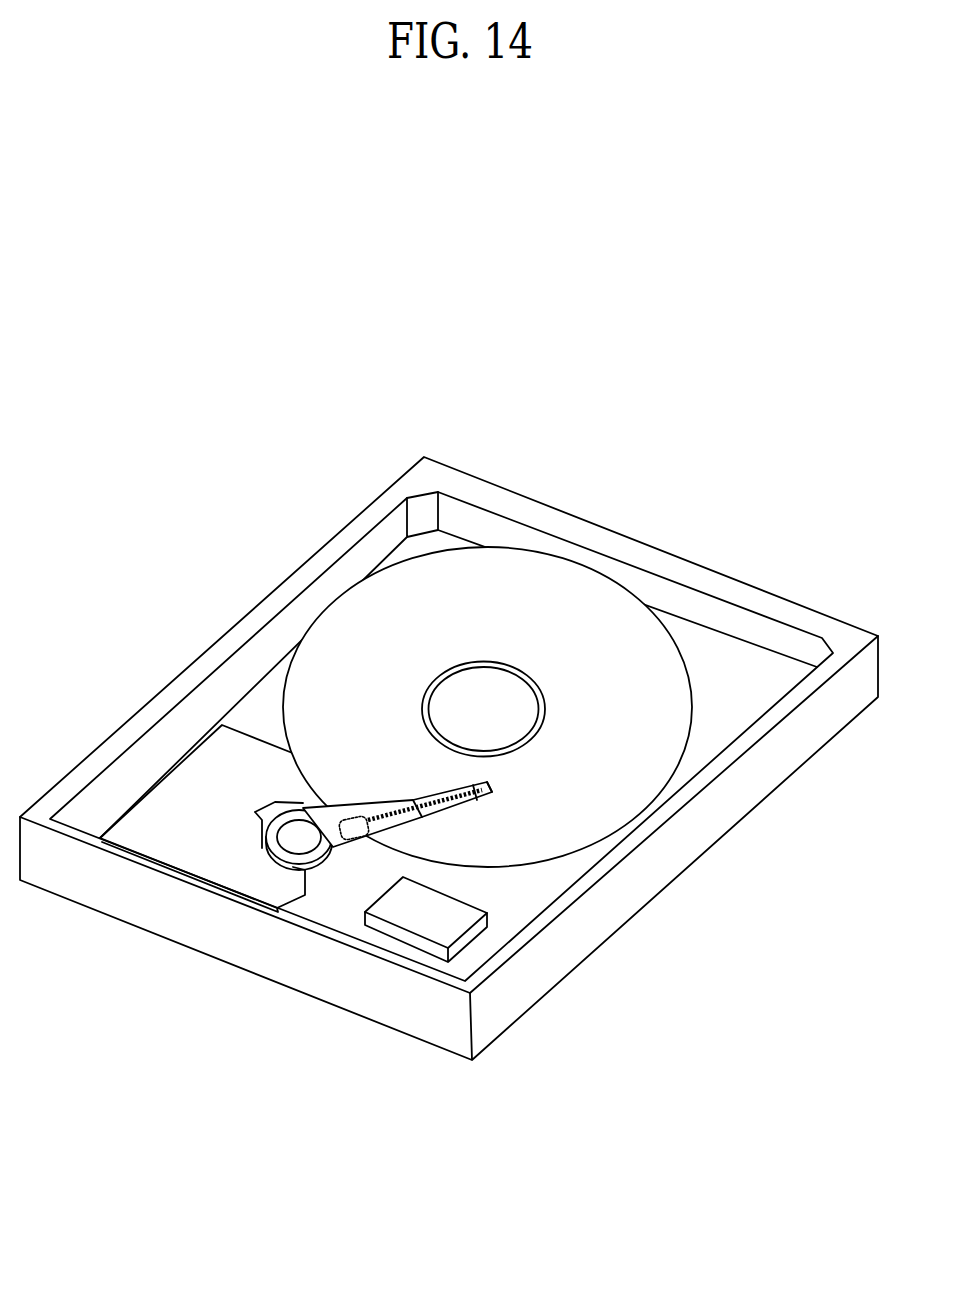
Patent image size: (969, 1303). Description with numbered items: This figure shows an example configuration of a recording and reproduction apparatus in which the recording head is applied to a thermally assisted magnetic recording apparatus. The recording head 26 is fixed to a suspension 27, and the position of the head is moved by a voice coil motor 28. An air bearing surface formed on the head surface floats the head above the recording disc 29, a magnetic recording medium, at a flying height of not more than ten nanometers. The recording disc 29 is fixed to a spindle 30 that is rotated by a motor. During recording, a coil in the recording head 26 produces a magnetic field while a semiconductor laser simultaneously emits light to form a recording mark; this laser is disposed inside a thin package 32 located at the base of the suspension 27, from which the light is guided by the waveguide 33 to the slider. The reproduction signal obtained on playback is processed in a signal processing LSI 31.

The recording head 26 is at (495, 787).
The suspension 27 is at (442, 812).
The voice coil motor 28 is at (216, 850).
The recording disc 29 is at (506, 625).
The spindle 30 is at (507, 687).
The signal processing LSI 31 is at (405, 920).
The thin package 32 is at (356, 842).
The waveguide 33 is at (393, 810).